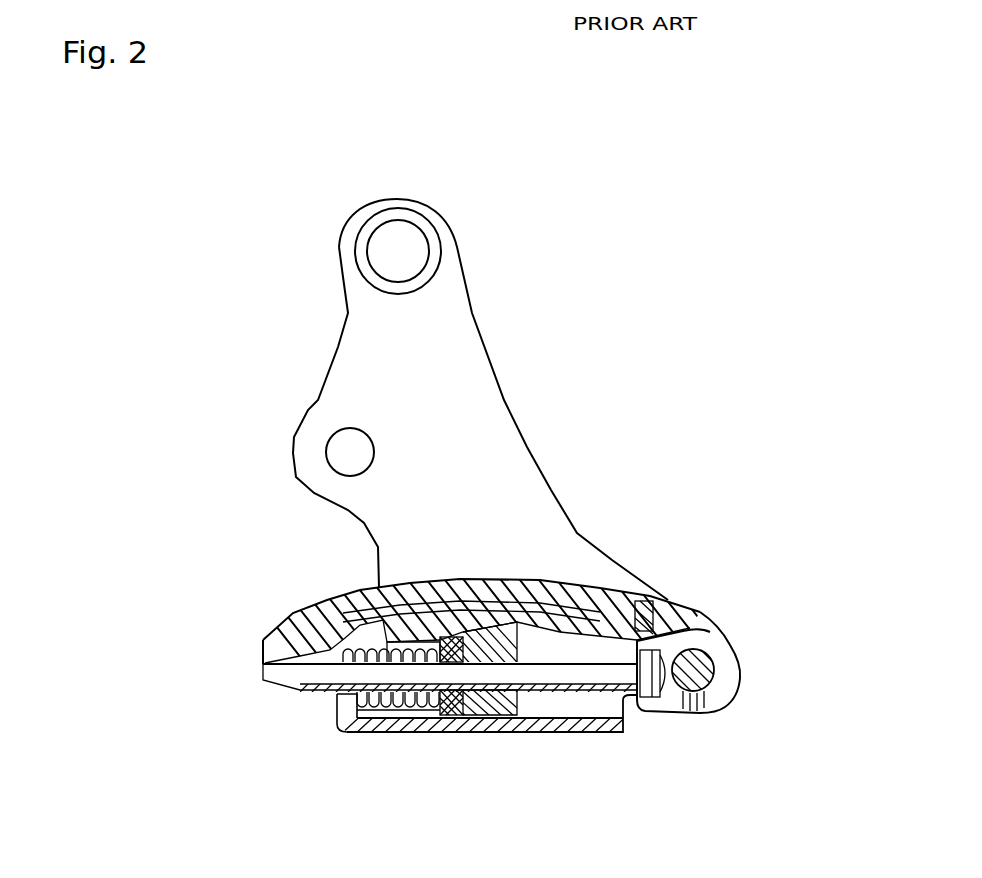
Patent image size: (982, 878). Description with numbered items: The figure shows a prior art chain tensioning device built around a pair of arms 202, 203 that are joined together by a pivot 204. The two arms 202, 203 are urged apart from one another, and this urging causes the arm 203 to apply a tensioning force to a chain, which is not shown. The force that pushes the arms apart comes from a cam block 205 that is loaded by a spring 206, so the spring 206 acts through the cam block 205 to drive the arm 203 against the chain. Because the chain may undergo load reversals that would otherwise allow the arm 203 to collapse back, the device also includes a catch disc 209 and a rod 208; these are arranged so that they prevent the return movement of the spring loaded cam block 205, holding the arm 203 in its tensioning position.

The arm 202 is at (590, 733).
The arm 203 is at (700, 614).
The pivot 204 is at (703, 683).
The cam block 205 is at (360, 593).
The spring 206 is at (343, 707).
The rod 208 is at (313, 675).
The catch disc 209 is at (463, 703).